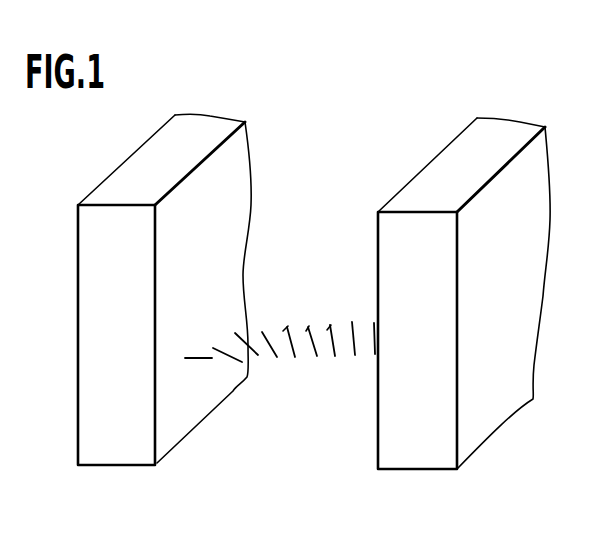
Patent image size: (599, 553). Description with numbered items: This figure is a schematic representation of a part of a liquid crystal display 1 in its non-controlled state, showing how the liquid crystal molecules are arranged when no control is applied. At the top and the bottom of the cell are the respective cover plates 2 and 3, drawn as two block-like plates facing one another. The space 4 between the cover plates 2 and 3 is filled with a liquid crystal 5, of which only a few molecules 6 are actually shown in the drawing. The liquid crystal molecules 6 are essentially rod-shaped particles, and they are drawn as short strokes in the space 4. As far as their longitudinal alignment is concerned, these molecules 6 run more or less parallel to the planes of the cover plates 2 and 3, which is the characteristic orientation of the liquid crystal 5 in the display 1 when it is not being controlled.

The liquid crystal display 1 is at (421, 76).
The cover plate 2 is at (128, 443).
The cover plate 3 is at (430, 444).
The space 4 is at (294, 443).
The liquid crystal 5 is at (318, 153).
The liquid crystal molecules 6 is at (288, 330).